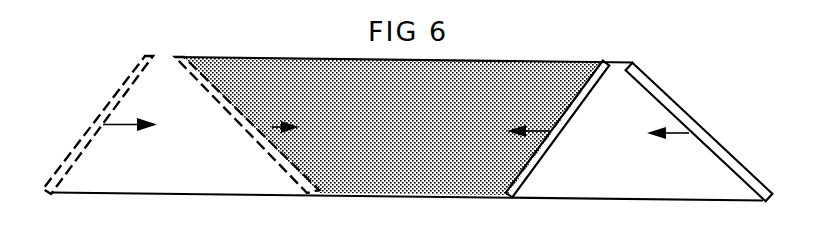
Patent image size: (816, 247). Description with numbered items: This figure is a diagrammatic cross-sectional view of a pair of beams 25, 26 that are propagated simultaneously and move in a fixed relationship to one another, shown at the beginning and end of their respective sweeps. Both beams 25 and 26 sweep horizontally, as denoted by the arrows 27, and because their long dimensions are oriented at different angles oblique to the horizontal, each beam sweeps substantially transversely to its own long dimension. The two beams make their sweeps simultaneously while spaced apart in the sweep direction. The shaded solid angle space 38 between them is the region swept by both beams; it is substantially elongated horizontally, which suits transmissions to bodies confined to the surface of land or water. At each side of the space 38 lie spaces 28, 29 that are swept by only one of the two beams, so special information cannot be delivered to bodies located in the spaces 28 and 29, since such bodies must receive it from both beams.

The beam 25 is at (65, 170).
The beam 26 is at (305, 180).
The arrows 27 is at (125, 123).
The space 28 is at (169, 178).
The space 29 is at (673, 189).
The solid angle space 38 is at (399, 144).